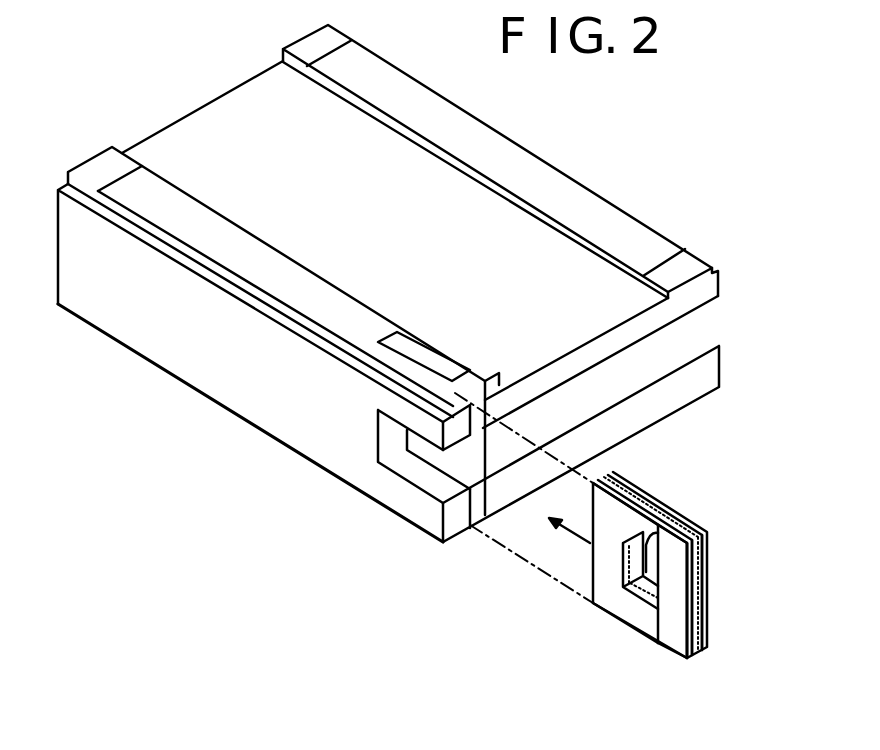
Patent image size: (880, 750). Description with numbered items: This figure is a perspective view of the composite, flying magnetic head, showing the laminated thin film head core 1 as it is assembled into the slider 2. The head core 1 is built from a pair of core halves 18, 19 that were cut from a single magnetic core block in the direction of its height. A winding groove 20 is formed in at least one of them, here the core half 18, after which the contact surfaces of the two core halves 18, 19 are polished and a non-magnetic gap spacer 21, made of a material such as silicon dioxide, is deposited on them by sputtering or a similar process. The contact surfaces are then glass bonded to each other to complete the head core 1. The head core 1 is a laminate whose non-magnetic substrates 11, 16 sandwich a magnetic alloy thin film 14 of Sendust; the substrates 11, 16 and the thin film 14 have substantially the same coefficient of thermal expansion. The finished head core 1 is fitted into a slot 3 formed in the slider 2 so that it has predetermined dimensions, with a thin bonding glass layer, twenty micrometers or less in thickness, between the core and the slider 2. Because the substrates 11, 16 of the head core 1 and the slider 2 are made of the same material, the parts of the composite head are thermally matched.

The head core 1 is at (653, 582).
The slider 2 is at (543, 192).
The slot 3 is at (440, 376).
The non-magnetic substrate 11 is at (693, 653).
The magnetic alloy thin film 14 is at (700, 602).
The non-magnetic substrate 16 is at (707, 643).
The core half 18 is at (630, 607).
The core half 19 is at (672, 633).
The winding groove 20 is at (623, 573).
The non-magnetic gap spacer 21 is at (670, 518).